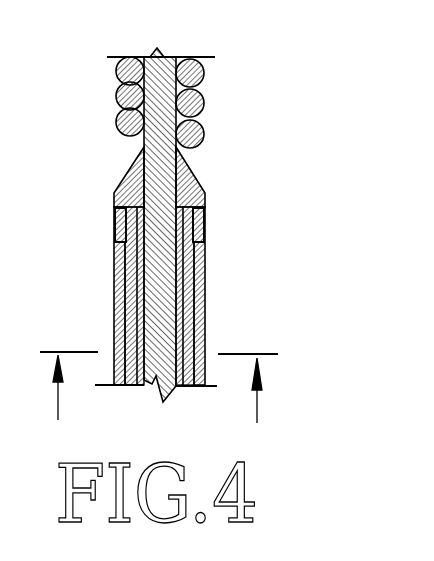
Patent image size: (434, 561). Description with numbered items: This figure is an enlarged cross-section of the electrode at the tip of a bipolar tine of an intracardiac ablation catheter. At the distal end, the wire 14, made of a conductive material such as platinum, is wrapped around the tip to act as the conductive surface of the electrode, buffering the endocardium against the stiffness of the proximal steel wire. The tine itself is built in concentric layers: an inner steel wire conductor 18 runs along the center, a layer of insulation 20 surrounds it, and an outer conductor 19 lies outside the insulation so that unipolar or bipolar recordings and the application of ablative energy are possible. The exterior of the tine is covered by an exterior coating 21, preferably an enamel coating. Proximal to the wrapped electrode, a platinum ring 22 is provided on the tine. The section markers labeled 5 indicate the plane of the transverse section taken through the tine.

The wire 14 is at (202, 100).
The inner steel wire conductor 18 is at (178, 165).
The layer of insulation 20 is at (196, 180).
The platinum ring 22 is at (205, 227).
The outer conductor 19 is at (205, 273).
The exterior coating 21 is at (205, 305).
The section line 5- 5 is at (159, 367).